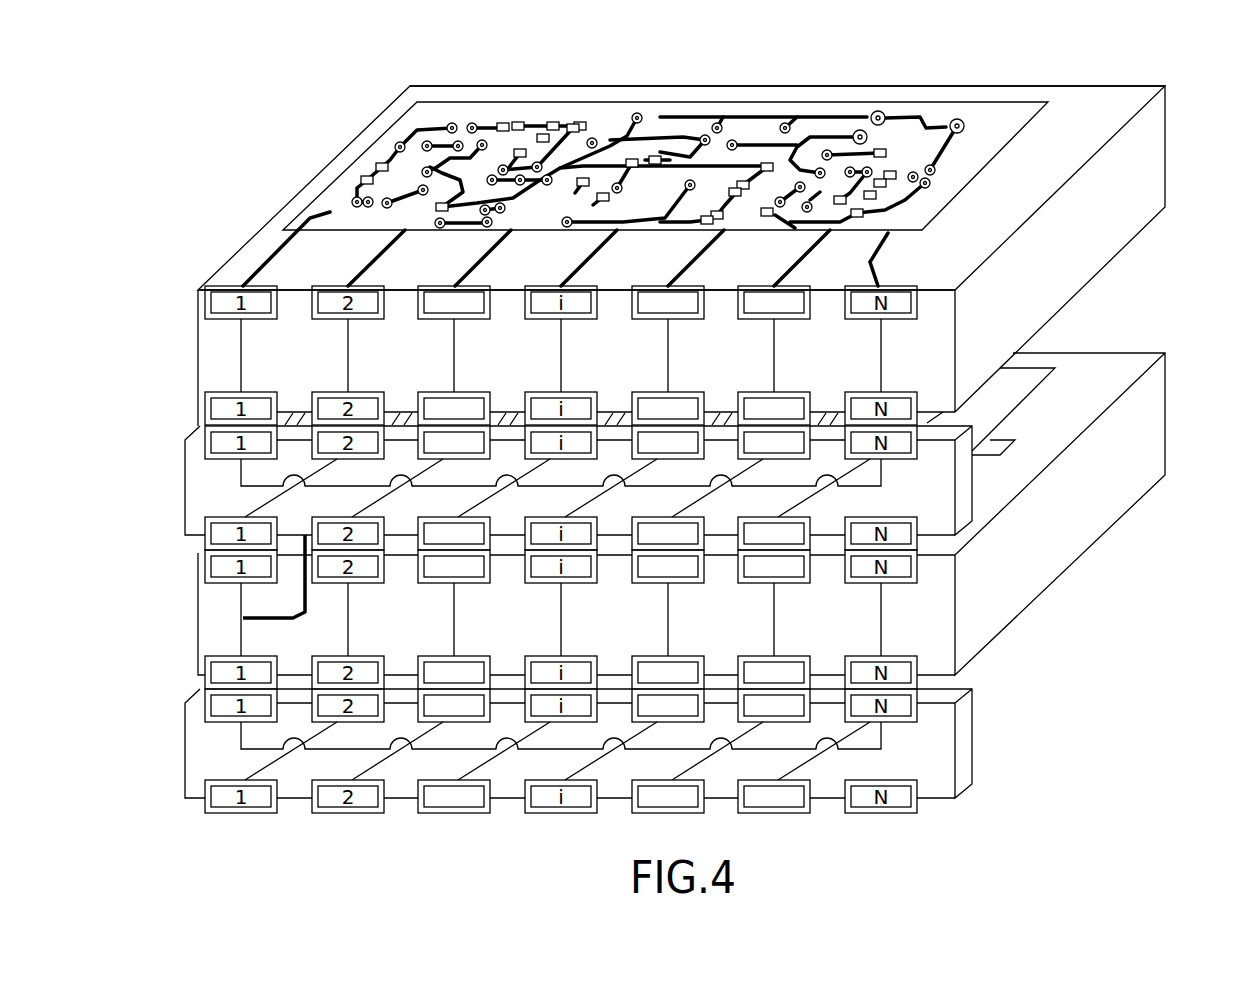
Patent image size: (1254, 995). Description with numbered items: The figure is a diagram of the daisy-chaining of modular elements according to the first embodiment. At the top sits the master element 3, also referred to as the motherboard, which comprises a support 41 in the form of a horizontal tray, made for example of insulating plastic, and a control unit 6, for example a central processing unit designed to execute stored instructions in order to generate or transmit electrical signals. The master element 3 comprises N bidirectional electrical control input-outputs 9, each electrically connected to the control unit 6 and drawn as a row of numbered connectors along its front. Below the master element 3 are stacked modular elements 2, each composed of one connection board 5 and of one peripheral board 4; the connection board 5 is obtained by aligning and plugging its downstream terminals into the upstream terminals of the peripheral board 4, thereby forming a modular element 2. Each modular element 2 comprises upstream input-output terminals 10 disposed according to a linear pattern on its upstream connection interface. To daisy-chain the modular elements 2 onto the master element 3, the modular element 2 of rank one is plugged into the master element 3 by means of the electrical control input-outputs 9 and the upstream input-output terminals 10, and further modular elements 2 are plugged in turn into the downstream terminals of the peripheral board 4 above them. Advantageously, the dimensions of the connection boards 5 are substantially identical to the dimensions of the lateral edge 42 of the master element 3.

The modular element 2 is at (170, 437).
The master element 3 is at (672, 226).
The peripheral board 4 is at (1060, 540).
The connection board 5 is at (963, 480).
The control unit 6 is at (375, 150).
The electrical control input-outputs 9 is at (225, 410).
The upstream input-output terminals 10 is at (225, 447).
The support 41 is at (1088, 117).
The lateral edge 42 is at (928, 338).